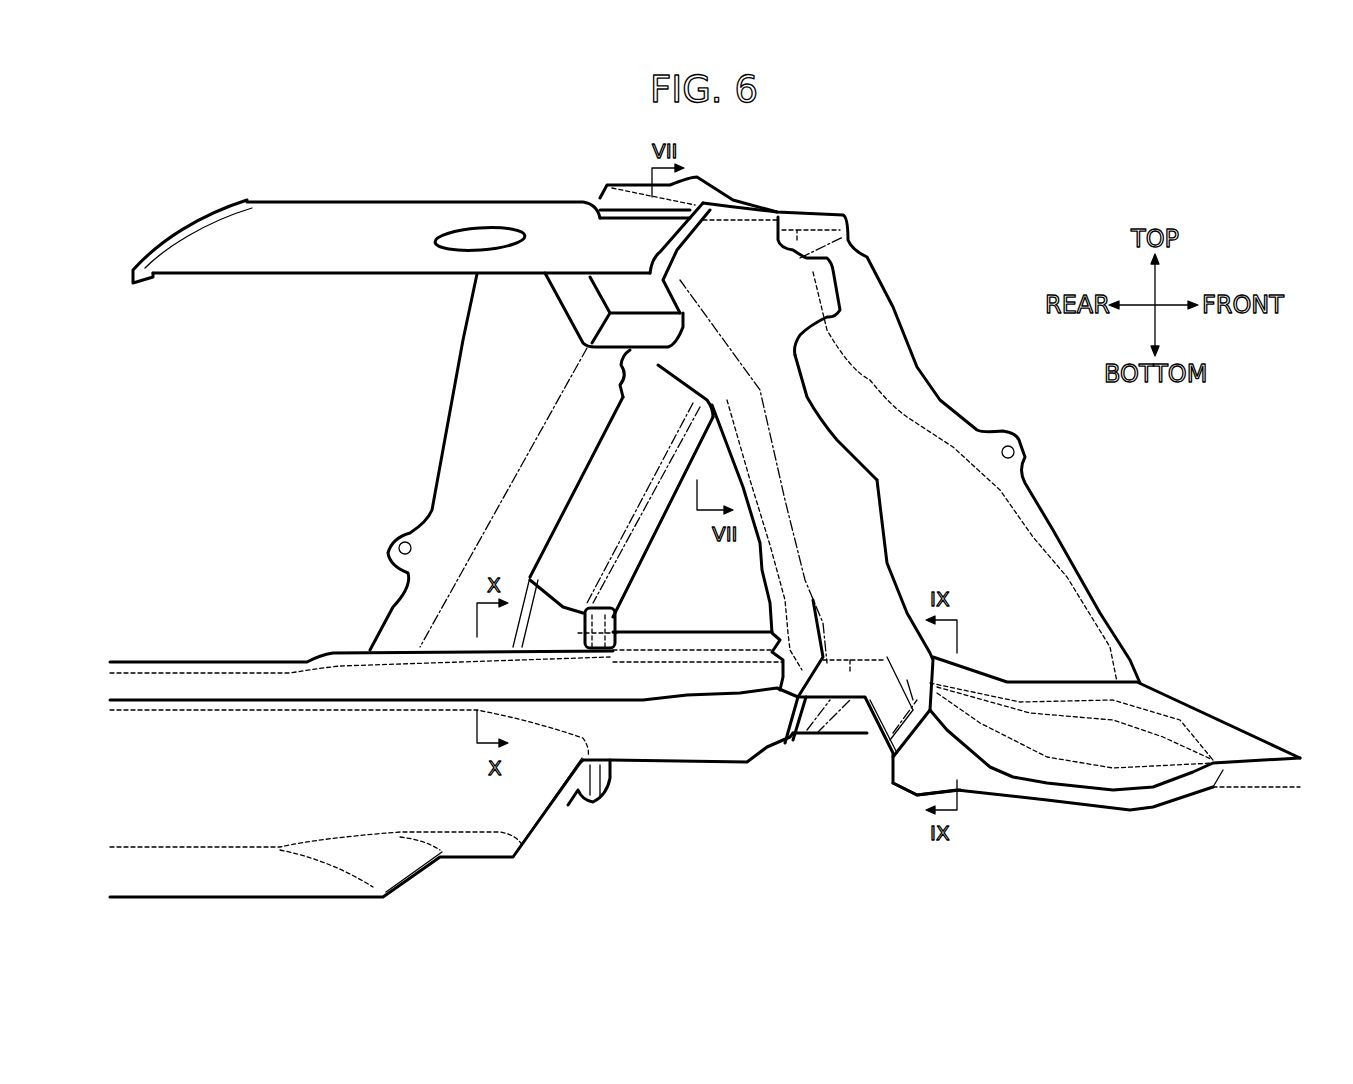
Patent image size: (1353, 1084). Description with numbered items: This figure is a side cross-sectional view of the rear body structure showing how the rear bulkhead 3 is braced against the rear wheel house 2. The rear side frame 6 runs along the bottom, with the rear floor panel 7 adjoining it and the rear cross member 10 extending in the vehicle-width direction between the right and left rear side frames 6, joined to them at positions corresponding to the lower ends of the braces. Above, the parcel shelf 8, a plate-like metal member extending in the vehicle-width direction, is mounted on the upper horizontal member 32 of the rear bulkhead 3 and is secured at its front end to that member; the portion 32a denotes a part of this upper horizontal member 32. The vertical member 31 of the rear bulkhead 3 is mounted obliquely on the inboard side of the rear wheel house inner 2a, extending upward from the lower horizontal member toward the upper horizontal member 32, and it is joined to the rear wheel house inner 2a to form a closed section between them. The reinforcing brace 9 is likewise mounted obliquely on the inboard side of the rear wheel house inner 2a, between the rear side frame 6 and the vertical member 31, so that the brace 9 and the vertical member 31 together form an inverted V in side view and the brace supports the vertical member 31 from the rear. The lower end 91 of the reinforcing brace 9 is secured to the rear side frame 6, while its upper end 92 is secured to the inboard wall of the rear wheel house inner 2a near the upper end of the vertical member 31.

The parcel shelf 8 is at (405, 228).
The upper portion of pillar inner reinforcement 32a is at (560, 318).
The upper horizontal member 32 is at (853, 672).
The rear wheel house 2 is at (478, 400).
The rear wheel house inner 2a is at (890, 355).
The vertical member 31 is at (857, 456).
The rear bulkhead 3 is at (882, 487).
The upper end of the reinforcing brace 92 is at (670, 393).
The reinforcing brace 9 is at (652, 533).
The lower end of the reinforcing brace 91 is at (600, 633).
The rear side frame 6 is at (692, 703).
The rear floor panel 7 is at (837, 733).
The rear cross member 10 is at (588, 805).